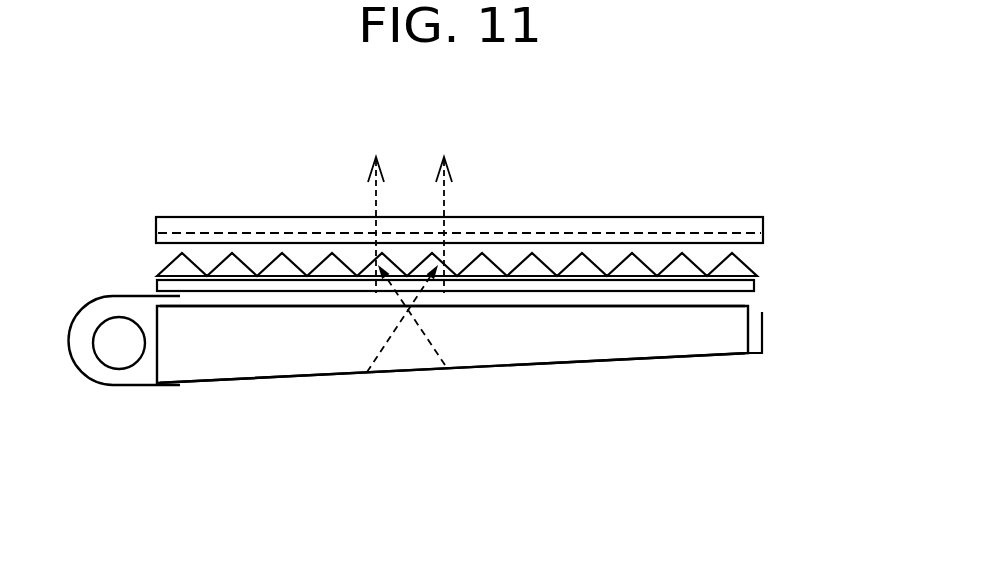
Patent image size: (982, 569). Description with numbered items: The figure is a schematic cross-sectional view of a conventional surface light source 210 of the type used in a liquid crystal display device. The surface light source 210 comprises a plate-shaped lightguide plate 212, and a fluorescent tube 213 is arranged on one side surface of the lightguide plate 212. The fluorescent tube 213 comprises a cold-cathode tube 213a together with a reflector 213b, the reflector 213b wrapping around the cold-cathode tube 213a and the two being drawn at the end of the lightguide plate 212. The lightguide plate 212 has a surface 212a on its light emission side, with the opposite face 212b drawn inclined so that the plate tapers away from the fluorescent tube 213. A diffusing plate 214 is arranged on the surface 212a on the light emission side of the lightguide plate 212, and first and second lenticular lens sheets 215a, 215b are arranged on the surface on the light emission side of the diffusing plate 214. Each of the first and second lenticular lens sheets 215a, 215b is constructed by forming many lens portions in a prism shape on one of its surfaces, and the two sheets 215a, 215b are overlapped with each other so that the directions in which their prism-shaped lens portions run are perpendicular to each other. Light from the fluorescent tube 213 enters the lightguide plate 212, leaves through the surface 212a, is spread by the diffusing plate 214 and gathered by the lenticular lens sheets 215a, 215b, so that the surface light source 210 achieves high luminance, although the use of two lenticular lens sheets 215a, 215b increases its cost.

The surface light source 210 is at (808, 188).
The lightguide plate 212 is at (513, 372).
The surface on the light emission side of the lightguide plate 212a is at (715, 303).
The bottom inclined surface of light guide plate 212b is at (492, 365).
The fluorescent tube 213 is at (106, 408).
The cold-cathode tube 213a is at (122, 350).
The reflector 213b is at (80, 370).
The diffusing plate 214 is at (754, 287).
The first lenticular lens sheet 215a is at (618, 223).
The second lenticular lens sheet 215b is at (688, 262).